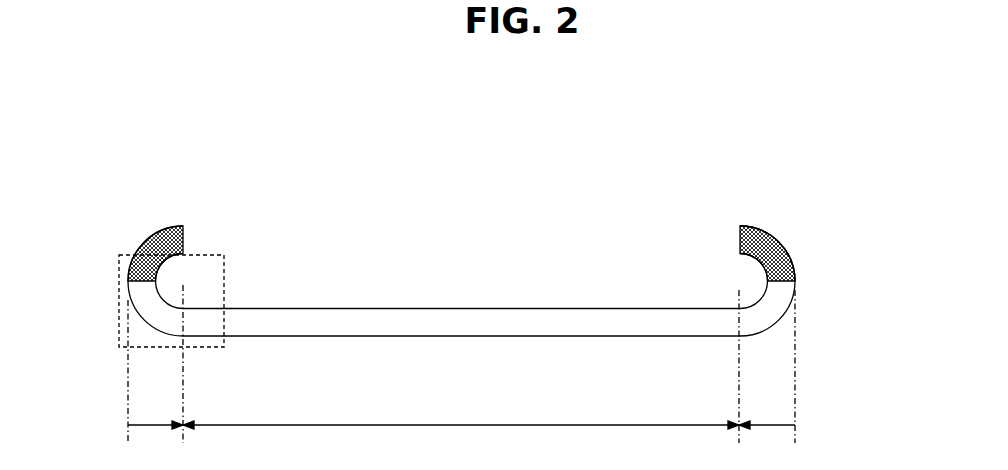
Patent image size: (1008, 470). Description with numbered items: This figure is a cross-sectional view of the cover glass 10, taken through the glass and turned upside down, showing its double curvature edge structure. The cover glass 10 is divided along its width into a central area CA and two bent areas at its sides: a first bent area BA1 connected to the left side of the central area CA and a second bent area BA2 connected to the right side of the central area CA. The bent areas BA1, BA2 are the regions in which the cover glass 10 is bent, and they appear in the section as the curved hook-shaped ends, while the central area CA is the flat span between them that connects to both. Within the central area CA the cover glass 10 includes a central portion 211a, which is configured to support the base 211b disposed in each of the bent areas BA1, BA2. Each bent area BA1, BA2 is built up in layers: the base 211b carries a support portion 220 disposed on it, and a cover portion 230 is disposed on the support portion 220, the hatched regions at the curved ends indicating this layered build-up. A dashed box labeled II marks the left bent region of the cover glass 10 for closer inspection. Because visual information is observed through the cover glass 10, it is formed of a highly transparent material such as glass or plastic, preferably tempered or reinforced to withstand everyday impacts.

The cover glass 10 is at (658, 120).
The central portion 211a is at (463, 330).
The base 211b is at (153, 318).
The support portion 220 is at (762, 231).
The cover portion 230 is at (790, 253).
The enlarged detail region II is at (200, 255).
The first bent area BA1 is at (155, 372).
The central area CA is at (461, 441).
The second bent area BA2 is at (767, 375).